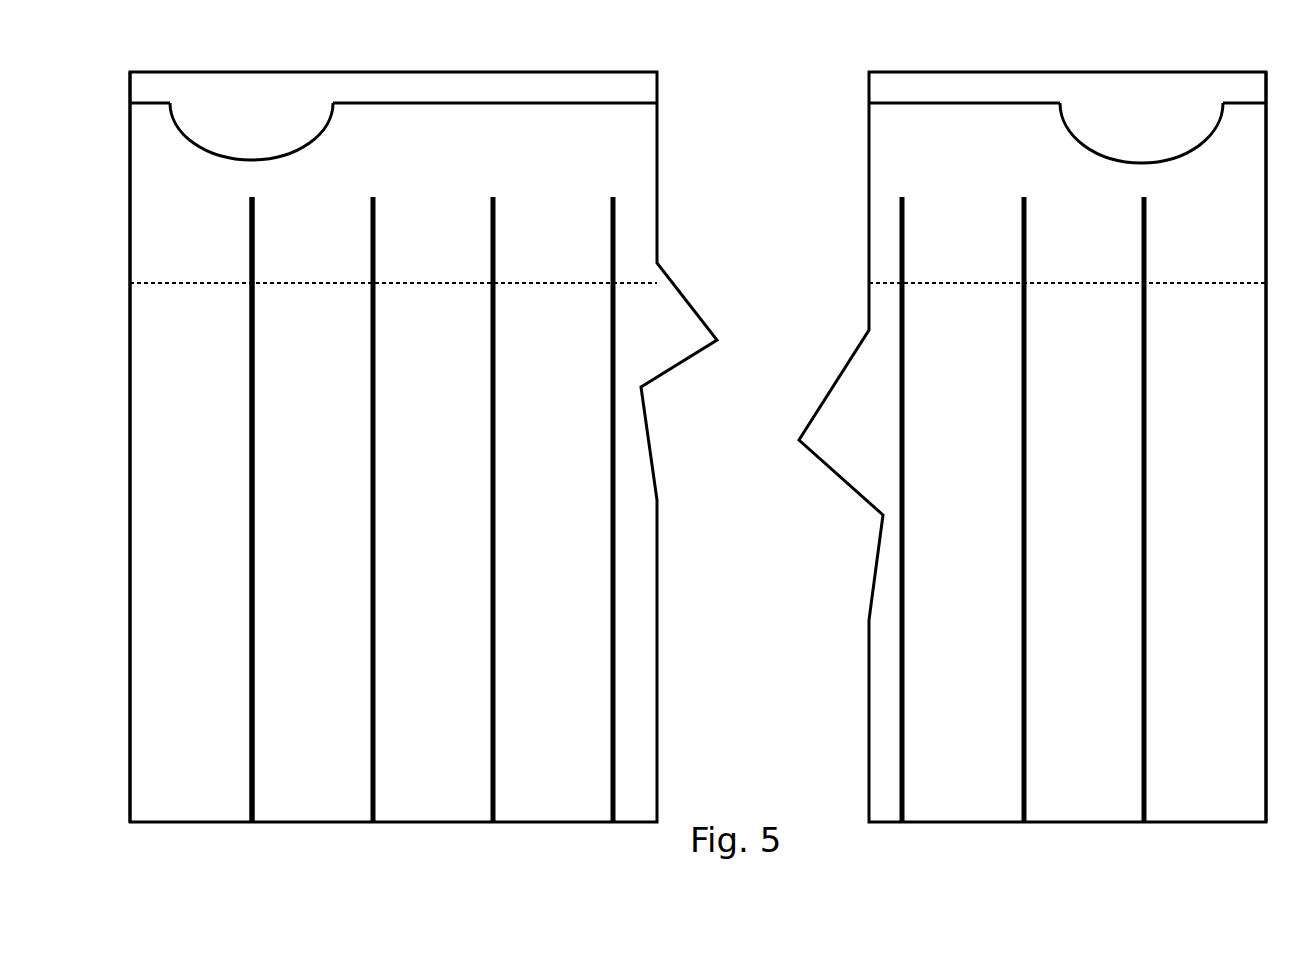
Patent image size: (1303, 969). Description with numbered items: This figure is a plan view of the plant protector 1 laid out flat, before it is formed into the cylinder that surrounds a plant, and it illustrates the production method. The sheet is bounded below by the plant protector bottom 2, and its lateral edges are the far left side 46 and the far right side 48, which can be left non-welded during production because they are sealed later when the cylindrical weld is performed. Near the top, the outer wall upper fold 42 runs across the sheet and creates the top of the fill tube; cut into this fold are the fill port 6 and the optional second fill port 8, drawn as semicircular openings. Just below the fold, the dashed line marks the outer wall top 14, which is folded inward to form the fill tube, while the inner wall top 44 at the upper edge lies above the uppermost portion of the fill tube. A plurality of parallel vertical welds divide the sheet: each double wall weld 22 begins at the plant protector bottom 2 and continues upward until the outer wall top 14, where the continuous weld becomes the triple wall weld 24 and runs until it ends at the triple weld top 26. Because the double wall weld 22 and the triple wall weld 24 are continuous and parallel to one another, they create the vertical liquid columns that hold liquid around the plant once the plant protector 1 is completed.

The plant protector 1 is at (553, 509).
The plant protector bottom 2 is at (398, 824).
The fill port 6 is at (322, 136).
The second fill port 8 is at (1212, 136).
The outer wall top 14 is at (428, 284).
The double wall weld 22 is at (255, 448).
The triple wall weld 24 is at (255, 243).
The triple weld top 26 is at (373, 198).
The outer wall upper fold 42 is at (520, 104).
The inner wall top 44 is at (995, 72).
The far left side 46 is at (131, 423).
The far right side 48 is at (1262, 503).